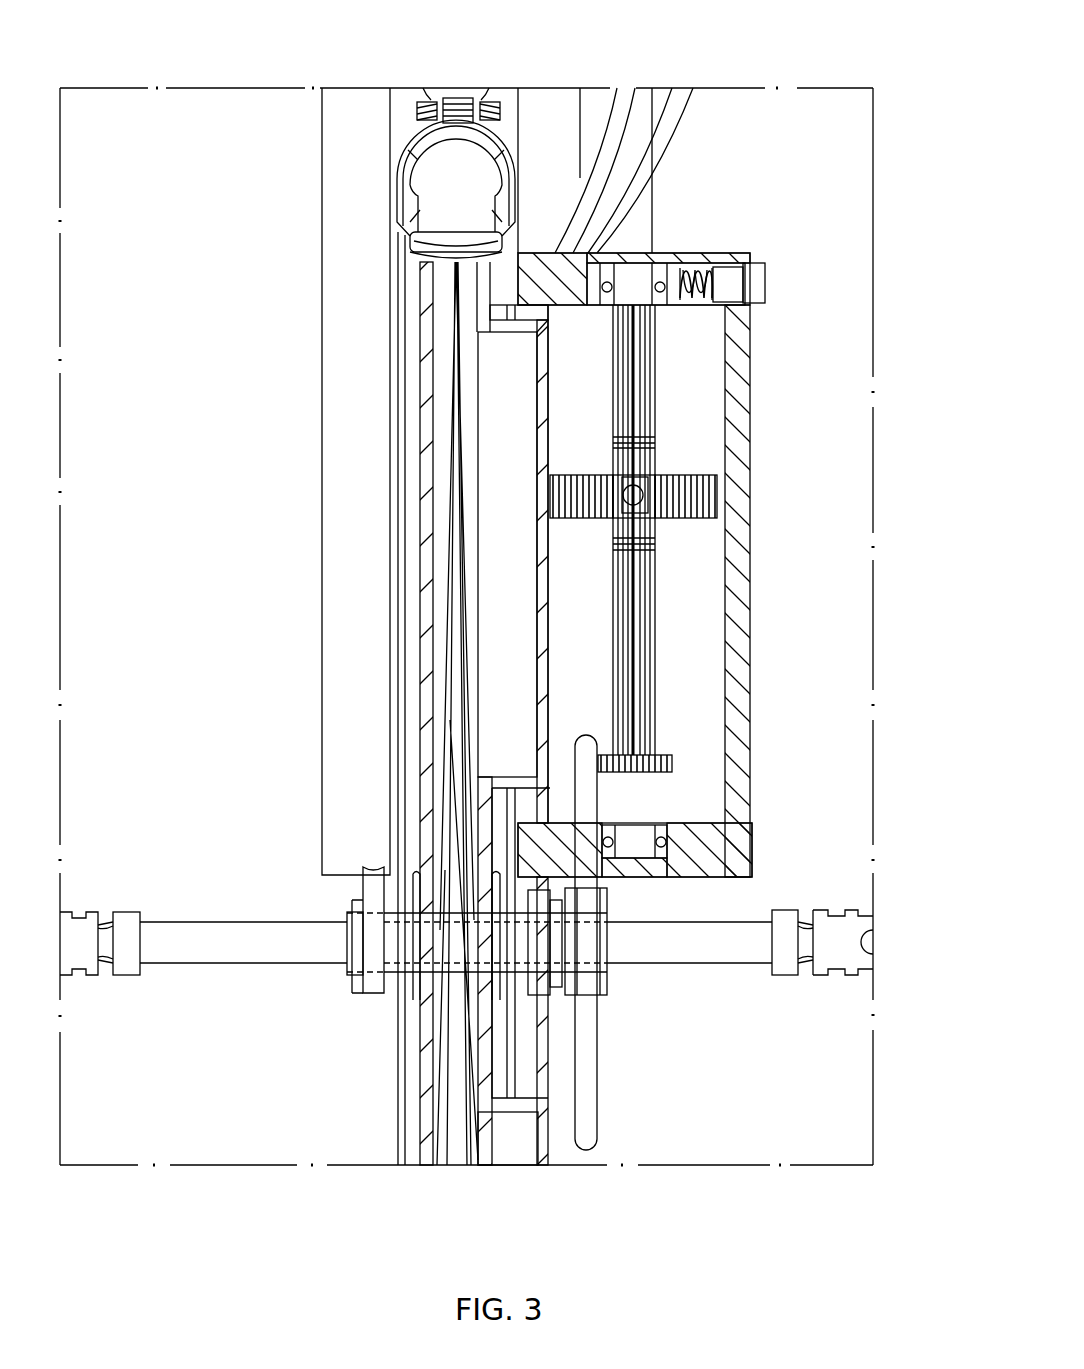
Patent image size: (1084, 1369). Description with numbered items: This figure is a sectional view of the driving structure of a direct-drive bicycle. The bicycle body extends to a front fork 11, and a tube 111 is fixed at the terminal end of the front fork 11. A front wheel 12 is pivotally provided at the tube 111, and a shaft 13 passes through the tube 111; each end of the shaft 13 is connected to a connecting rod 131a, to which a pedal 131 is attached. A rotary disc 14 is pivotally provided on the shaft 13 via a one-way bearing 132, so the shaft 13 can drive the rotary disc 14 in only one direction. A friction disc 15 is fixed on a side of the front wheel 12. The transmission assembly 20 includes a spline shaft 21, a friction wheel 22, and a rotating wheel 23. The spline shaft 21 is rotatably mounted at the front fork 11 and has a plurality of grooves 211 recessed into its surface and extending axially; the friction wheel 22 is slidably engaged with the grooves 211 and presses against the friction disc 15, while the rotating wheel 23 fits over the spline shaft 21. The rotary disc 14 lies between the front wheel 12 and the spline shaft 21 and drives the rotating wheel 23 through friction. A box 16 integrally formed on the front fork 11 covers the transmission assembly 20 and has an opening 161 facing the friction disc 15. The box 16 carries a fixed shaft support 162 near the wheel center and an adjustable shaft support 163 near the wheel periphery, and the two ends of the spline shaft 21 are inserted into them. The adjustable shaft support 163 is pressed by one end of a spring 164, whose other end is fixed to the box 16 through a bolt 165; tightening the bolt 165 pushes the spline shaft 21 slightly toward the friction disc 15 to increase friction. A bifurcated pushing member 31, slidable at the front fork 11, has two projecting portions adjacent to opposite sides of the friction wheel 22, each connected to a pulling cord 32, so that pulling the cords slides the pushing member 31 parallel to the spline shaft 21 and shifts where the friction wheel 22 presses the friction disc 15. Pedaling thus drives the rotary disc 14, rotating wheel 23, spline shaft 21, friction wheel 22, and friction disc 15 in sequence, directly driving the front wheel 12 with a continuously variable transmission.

The front fork 11 is at (590, 117).
The front wheel 12 is at (410, 132).
The shaft 13 is at (743, 957).
The rotary disc 14 is at (598, 1130).
The friction disc 15 is at (545, 390).
The box 16 is at (598, 669).
The transmission assembly 20 is at (743, 538).
The spline shaft 21 is at (730, 530).
The friction wheel 22 is at (675, 498).
The rotating wheel 23 is at (704, 751).
The bifurcated pushing member 31 is at (630, 438).
The pulling cord 32 is at (668, 128).
The tube 111 is at (395, 960).
The pedal 131 is at (77, 925).
The connecting rod 131a is at (130, 945).
The one-way bearing 132 is at (598, 990).
The opening 161 is at (575, 321).
The fixed shaft support 162 is at (660, 832).
The adjustable shaft support 163 is at (661, 270).
The spring 164 is at (712, 272).
The bolt 165 is at (740, 288).
The grooves 211 is at (635, 608).